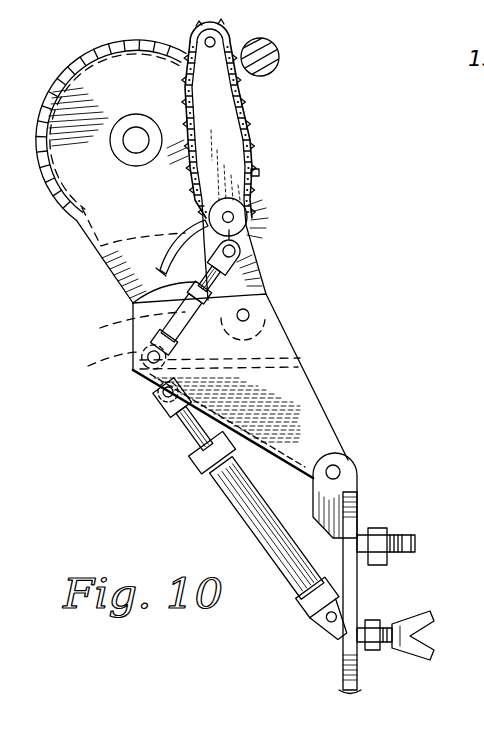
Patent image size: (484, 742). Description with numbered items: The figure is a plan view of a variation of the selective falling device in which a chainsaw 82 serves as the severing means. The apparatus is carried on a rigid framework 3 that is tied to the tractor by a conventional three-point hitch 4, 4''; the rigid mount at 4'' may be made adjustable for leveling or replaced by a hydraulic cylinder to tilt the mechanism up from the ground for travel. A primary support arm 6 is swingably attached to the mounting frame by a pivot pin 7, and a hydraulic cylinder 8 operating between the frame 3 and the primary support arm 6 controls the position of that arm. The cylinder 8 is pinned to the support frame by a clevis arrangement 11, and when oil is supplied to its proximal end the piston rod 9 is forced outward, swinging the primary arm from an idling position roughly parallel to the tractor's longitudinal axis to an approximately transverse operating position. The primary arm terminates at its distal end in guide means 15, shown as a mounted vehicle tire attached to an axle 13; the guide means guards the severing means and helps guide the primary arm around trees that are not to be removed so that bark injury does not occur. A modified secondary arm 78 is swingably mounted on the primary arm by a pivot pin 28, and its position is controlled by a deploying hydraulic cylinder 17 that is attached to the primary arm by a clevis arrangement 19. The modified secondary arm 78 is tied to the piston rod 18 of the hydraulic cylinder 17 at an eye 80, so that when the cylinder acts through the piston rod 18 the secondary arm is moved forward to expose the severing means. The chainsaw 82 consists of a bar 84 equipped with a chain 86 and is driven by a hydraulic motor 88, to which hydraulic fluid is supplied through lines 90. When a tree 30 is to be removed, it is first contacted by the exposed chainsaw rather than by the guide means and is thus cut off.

The guide means 15 is at (94, 22).
The axle 13 is at (136, 130).
The tree 30 is at (280, 50).
The bar 84 is at (226, 114).
The chainsaw 82 is at (262, 142).
The chain 86 is at (260, 173).
The hydraulic motor 88 is at (250, 219).
The eye 80 is at (246, 250).
The modified secondary arm 78 is at (254, 281).
The lines 90 is at (184, 221).
The pivot pin 28 is at (250, 320).
The piston rod 18 is at (133, 303).
The hydraulic cylinder 17 is at (124, 325).
The clevis arrangement 19 is at (179, 362).
The primary support arm 6 is at (310, 406).
The pivot pin 7 is at (341, 471).
The rigid framework 3 is at (357, 512).
The three-point hitch 4 is at (397, 531).
The three-point hitch 4'' is at (407, 611).
The hydraulic cylinder 8 is at (246, 504).
The piston rod 9 is at (194, 436).
The clevis arrangement 11 is at (330, 628).